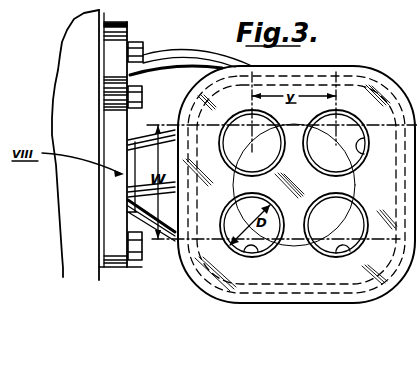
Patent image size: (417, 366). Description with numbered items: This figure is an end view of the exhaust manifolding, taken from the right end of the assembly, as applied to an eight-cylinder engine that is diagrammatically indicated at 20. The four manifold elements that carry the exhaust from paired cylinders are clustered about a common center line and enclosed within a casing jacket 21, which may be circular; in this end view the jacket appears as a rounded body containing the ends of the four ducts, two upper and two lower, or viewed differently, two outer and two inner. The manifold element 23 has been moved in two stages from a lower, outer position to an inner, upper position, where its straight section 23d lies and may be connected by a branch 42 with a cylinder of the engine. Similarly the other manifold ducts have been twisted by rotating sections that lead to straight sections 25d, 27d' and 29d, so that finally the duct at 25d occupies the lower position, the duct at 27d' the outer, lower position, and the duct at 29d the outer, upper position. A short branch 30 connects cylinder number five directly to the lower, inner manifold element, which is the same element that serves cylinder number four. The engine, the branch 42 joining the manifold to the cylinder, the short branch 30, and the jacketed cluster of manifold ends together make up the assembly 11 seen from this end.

The device assembly 11 is at (402, 5).
The engine 20 is at (73, 53).
The casing jacket 21 is at (200, 270).
The manifold element 23 is at (80, 133).
The straight section 23d is at (222, 108).
The straight section 25d is at (258, 254).
The straight section 27d' is at (355, 256).
The straight section 29d is at (350, 161).
The short branch 30 is at (127, 225).
The branch 42 is at (127, 132).